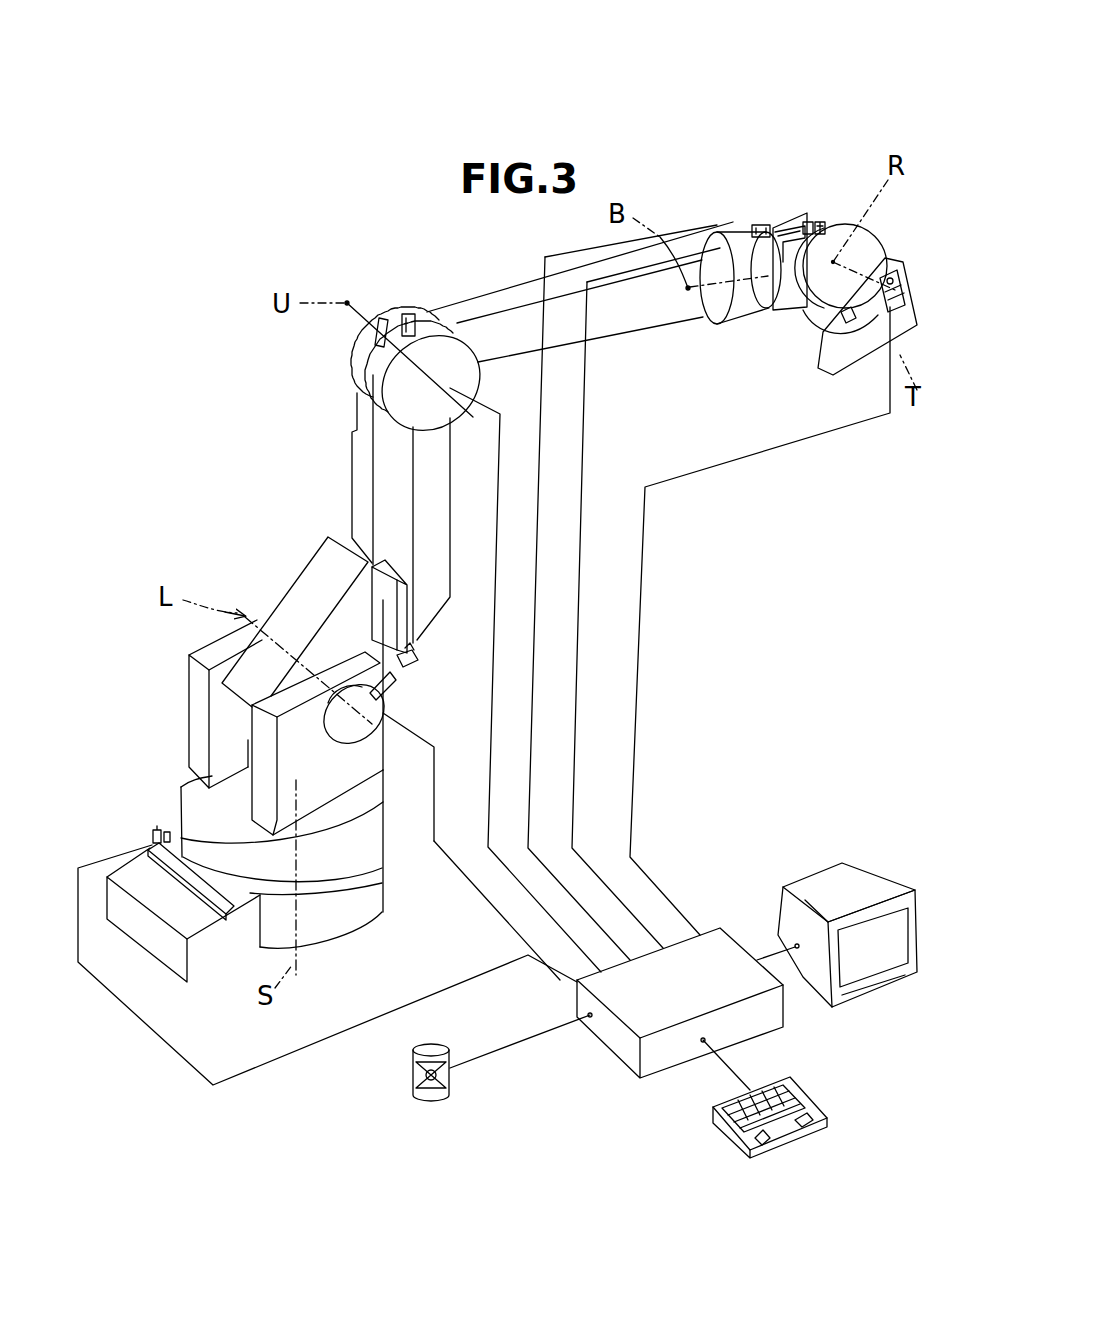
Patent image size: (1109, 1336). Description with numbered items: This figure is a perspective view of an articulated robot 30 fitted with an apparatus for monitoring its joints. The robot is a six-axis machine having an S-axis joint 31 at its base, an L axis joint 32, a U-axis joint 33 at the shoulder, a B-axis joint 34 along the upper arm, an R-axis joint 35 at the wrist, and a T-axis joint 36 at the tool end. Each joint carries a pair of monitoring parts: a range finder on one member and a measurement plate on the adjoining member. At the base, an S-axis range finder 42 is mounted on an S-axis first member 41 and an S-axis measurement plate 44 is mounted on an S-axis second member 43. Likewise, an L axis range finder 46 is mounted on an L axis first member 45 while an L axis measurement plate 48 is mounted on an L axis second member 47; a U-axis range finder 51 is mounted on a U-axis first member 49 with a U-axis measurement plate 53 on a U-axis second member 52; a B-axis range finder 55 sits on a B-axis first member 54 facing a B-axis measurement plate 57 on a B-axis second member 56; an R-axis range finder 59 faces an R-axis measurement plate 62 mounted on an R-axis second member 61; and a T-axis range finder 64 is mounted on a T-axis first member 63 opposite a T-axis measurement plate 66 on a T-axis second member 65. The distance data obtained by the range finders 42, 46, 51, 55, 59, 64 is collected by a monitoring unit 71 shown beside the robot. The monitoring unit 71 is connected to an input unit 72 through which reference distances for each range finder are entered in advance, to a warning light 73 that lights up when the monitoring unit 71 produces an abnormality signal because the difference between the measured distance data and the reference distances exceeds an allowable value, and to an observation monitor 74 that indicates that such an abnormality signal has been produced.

The articulated robot 30 is at (165, 300).
The S-axis joint 31 is at (368, 885).
The L axis joint 32 is at (392, 730).
The U-axis joint 33 is at (342, 357).
The B-axis joint 34 is at (715, 215).
The R-axis joint 35 is at (847, 217).
The T-axis joint 36 is at (855, 340).
The S-axis first member 41 is at (343, 917).
The S-axis range finder 42 is at (157, 832).
The S-axis second member 43 is at (367, 847).
The S-axis measurement plate 44 is at (168, 834).
The L axis first member 45 is at (343, 780).
The L axis range finder 46 is at (397, 678).
The L axis second member 47 is at (297, 592).
The L axis measurement plate 48 is at (416, 662).
The U-axis first member 49 is at (428, 315).
The U-axis range finder 51 is at (408, 313).
The U-axis second member 52 is at (360, 370).
The U-axis measurement plate 53 is at (381, 321).
The B-axis first member 54 is at (643, 313).
The B-axis range finder 55 is at (765, 224).
The B-axis second member 56 is at (797, 288).
The B-axis measurement plate 57 is at (758, 226).
The R-axis range finder 59 is at (806, 222).
The R-axis second member 61 is at (877, 242).
The R-axis measurement plate 62 is at (820, 226).
The T-axis first member 63 is at (838, 337).
The T-axis range finder 64 is at (895, 274).
The T-axis second member 65 is at (908, 320).
The T-axis measurement plate 66 is at (903, 293).
The monitoring unit 71 is at (600, 1028).
The input unit 72 is at (730, 1132).
The warning light 73 is at (433, 1098).
The observation monitor 74 is at (880, 888).